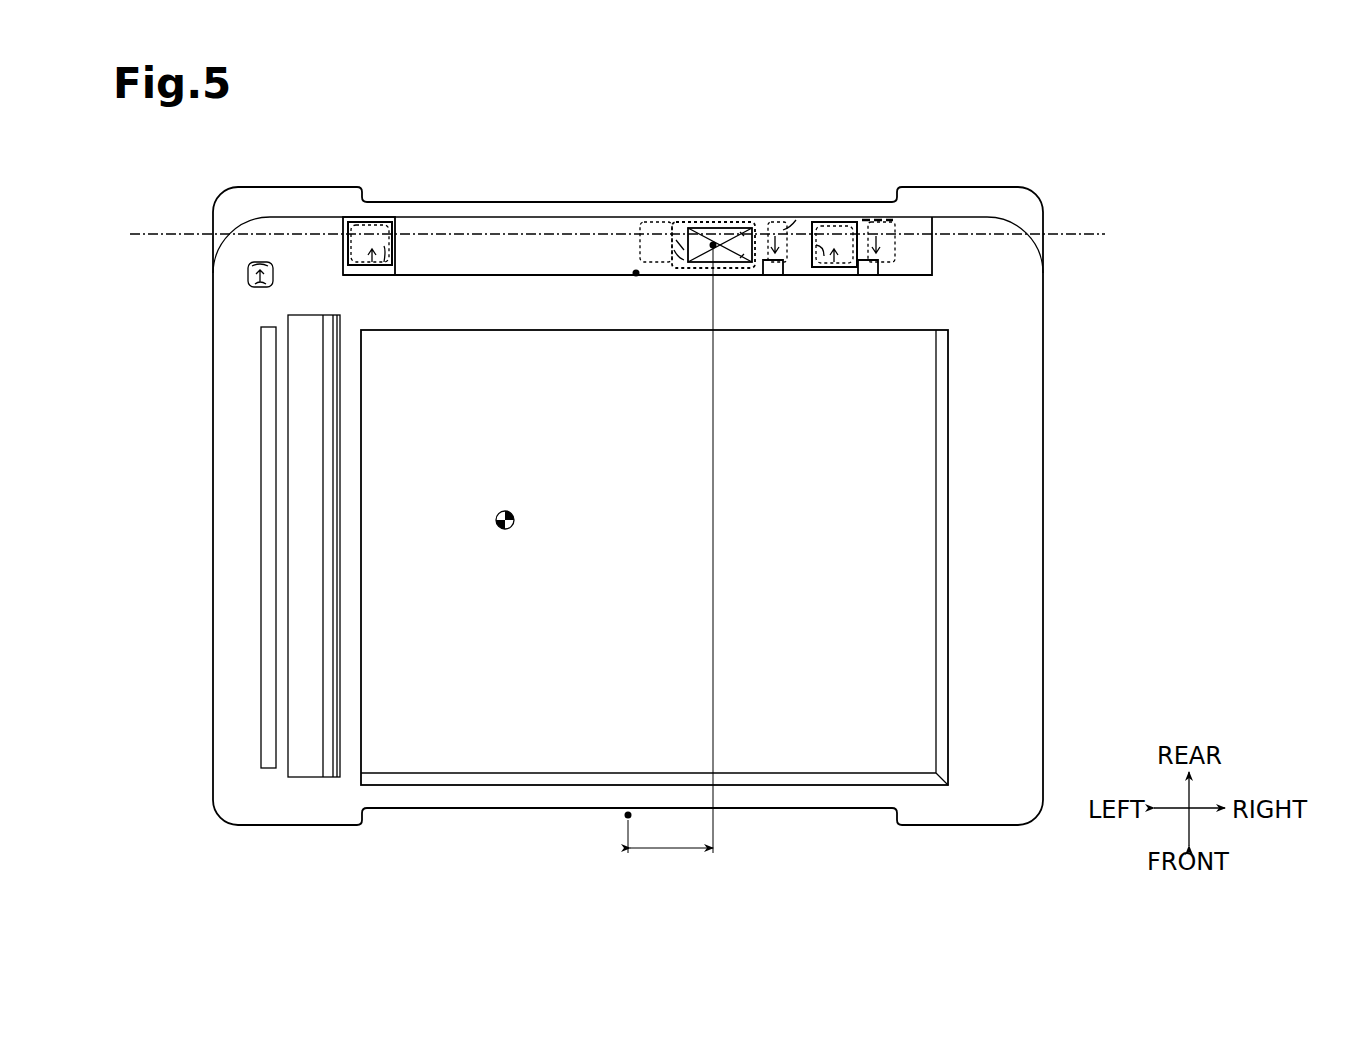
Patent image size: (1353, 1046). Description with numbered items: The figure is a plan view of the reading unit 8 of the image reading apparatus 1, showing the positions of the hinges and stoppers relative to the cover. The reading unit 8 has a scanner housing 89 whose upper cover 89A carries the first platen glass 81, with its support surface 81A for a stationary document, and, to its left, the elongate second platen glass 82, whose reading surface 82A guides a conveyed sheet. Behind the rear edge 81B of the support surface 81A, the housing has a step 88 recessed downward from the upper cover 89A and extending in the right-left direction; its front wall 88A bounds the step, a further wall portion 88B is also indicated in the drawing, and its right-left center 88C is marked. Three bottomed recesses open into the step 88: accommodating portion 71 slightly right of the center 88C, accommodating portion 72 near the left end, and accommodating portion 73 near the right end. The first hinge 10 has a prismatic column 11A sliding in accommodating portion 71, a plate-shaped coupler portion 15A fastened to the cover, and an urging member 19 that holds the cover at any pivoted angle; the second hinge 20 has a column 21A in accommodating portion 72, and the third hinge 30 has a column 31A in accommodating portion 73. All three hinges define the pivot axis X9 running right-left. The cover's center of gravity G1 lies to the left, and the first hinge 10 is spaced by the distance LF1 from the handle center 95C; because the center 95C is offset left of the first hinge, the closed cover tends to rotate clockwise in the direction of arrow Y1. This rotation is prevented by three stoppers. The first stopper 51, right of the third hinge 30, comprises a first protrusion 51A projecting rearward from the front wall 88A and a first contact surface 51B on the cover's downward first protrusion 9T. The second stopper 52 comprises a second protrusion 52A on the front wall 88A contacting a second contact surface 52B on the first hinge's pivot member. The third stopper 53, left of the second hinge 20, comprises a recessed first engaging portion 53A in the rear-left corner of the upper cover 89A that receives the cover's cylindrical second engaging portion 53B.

The image reading apparatus 1 is at (1122, 350).
The reading unit 8 is at (1047, 470).
The first protrusion 9T is at (893, 224).
The first hinge 10 is at (678, 263).
The column 11A is at (690, 230).
The coupler portion 15A is at (796, 220).
The urging member 19 is at (706, 263).
The second hinge 20 is at (373, 265).
The column 21A is at (373, 230).
The third hinge 30 is at (834, 264).
The column 31A is at (834, 228).
The first stopper 51 is at (933, 466).
The first protrusion 51A is at (869, 275).
The first contact surface 51B is at (886, 264).
The second stopper 52 is at (818, 466).
The second protrusion 52A is at (773, 275).
The second contact surface 52B is at (766, 265).
The third stopper 53 is at (130, 253).
The first engaging portion 53A is at (258, 285).
The second engaging portion 53B is at (252, 264).
The accommodating portion 71 is at (674, 264).
The accommodating portion 72 is at (390, 250).
The accommodating portion 73 is at (826, 266).
The first platen glass 81 is at (876, 745).
The support surface 81A is at (876, 690).
The rear edge 81B is at (507, 331).
The second platen glass 82 is at (305, 680).
The reading surface 82A is at (305, 625).
The step 88 is at (486, 249).
The front wall 88A is at (536, 273).
The channel front face 88B is at (455, 250).
The center 88C is at (636, 273).
The scanner housing 89 is at (1013, 592).
The upper cover 89A is at (1011, 530).
The center 95C is at (628, 818).
The center of gravity G1 is at (515, 520).
The distance LF1 is at (670, 836).
The pivot axis X9 is at (637, 234).
The arrow Y1 is at (772, 190).